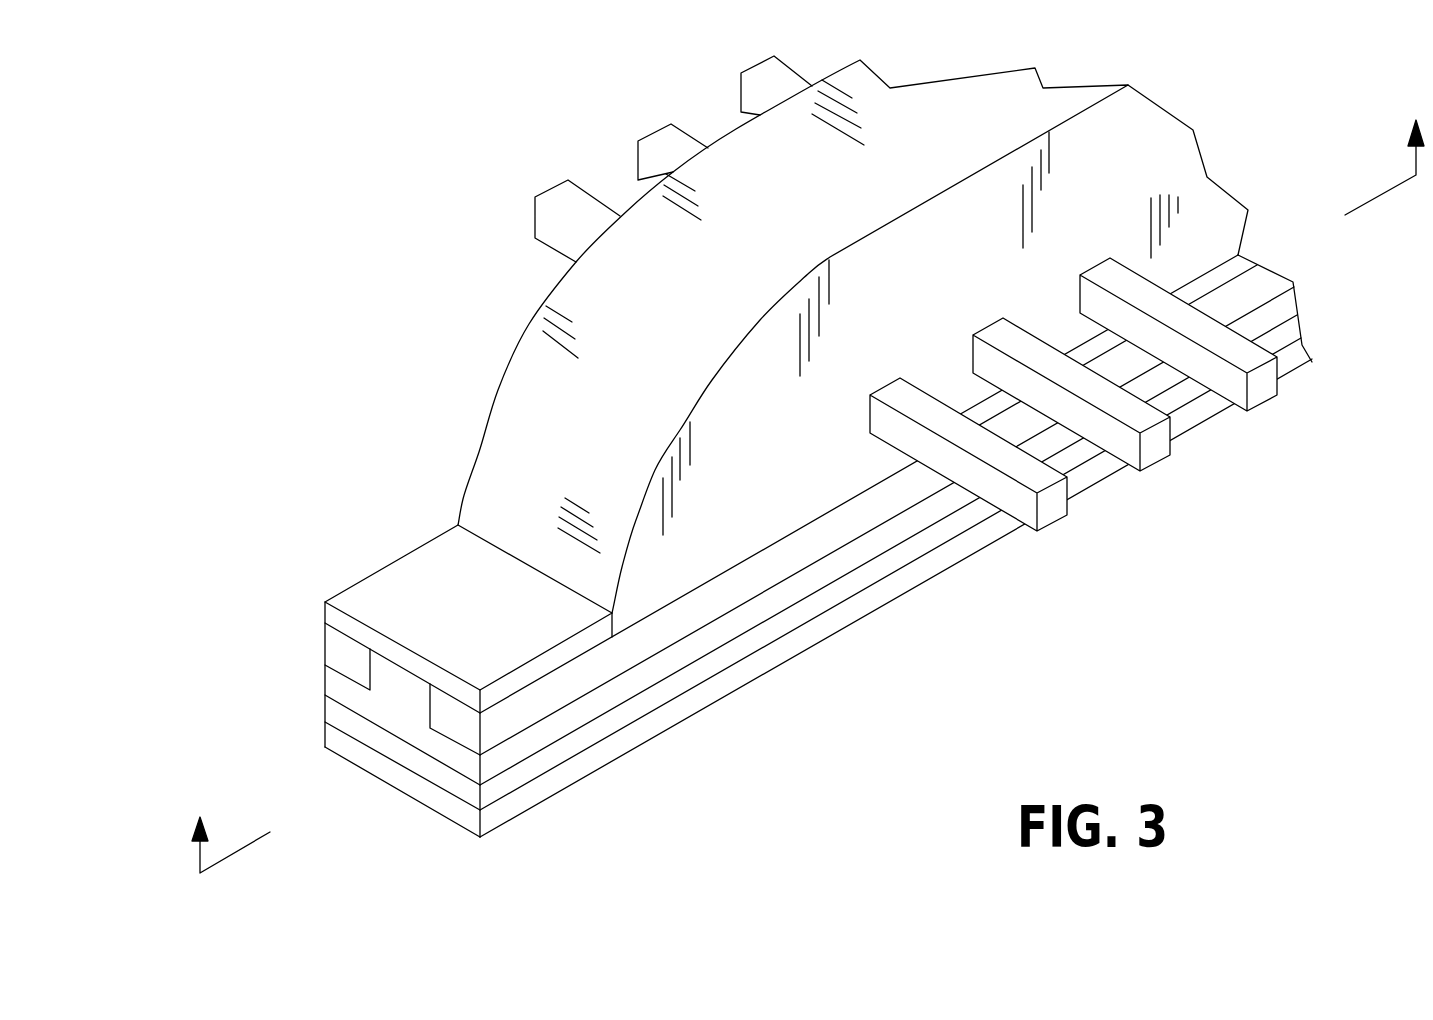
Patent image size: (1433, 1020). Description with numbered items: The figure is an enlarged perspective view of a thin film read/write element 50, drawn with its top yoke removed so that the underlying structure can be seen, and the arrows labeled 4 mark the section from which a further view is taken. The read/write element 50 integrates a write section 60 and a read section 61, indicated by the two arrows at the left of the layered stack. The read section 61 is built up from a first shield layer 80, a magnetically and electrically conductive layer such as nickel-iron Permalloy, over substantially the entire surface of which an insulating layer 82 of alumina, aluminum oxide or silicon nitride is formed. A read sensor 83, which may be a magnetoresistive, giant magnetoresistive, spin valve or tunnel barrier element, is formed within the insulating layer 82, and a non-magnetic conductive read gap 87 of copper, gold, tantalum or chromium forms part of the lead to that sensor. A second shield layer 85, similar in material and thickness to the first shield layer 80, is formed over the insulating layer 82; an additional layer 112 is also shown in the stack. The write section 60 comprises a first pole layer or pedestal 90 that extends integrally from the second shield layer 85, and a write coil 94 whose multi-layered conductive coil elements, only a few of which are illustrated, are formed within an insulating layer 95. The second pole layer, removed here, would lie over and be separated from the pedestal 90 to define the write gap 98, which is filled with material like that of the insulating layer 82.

The section line for FIG. 4 is at (807, 475).
The read/write element 50 is at (556, 50).
The write section 60 is at (392, 681).
The read section 61 is at (330, 772).
The first shield layer 80 is at (896, 555).
The insulating layer 82 is at (890, 585).
The read sensor 83 is at (415, 762).
The second shield layer 85 is at (587, 712).
The read gap 87 is at (557, 753).
The first pole layer 90 is at (392, 700).
The write coil 94 is at (1265, 393).
The insulating layer 95 is at (995, 299).
The write gap 98 is at (338, 618).
The upper slab layer 112 is at (770, 572).